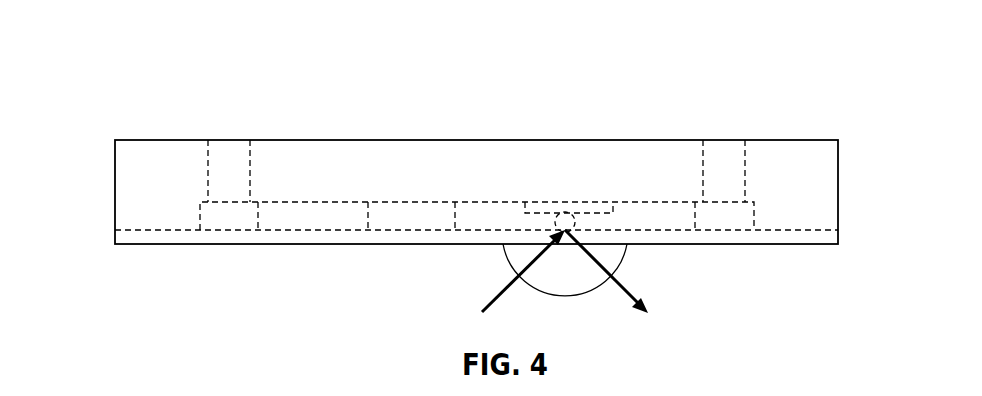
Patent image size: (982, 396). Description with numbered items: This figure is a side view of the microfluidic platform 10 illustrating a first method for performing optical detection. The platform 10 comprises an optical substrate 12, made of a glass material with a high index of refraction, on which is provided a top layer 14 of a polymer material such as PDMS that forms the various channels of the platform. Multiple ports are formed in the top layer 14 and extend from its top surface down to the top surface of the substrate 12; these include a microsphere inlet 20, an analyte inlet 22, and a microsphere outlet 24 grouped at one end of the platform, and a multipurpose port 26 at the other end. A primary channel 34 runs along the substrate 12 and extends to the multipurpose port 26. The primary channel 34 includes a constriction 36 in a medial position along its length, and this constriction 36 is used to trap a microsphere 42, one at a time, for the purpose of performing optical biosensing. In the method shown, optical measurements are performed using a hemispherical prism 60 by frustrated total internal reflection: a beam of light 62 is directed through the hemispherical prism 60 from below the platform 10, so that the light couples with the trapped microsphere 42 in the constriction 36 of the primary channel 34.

The microfluidic platform 10 is at (90, 117).
The optical substrate 12 is at (340, 245).
The top layer 14 is at (122, 197).
The microsphere inlet 20 is at (231, 152).
The analyte inlet 22 is at (231, 152).
The microsphere outlet 24 is at (228, 150).
The multipurpose port 26 is at (725, 153).
The primary channel 34 is at (650, 210).
The constriction 36 is at (534, 187).
The microsphere 42 is at (566, 212).
The hemispherical prism 60 is at (517, 260).
The beam of light 62 is at (500, 292).